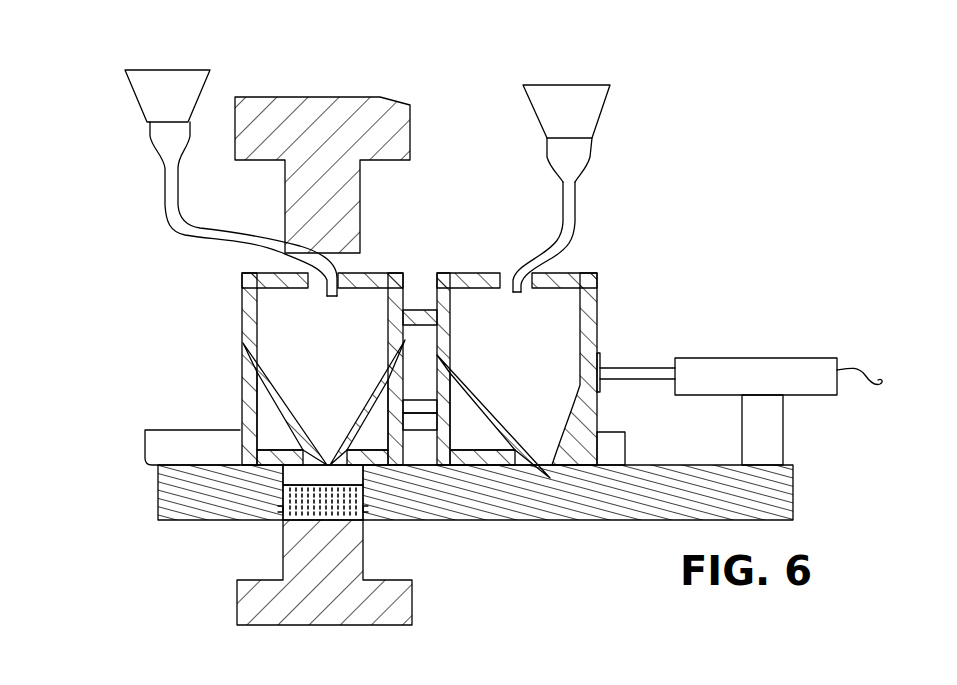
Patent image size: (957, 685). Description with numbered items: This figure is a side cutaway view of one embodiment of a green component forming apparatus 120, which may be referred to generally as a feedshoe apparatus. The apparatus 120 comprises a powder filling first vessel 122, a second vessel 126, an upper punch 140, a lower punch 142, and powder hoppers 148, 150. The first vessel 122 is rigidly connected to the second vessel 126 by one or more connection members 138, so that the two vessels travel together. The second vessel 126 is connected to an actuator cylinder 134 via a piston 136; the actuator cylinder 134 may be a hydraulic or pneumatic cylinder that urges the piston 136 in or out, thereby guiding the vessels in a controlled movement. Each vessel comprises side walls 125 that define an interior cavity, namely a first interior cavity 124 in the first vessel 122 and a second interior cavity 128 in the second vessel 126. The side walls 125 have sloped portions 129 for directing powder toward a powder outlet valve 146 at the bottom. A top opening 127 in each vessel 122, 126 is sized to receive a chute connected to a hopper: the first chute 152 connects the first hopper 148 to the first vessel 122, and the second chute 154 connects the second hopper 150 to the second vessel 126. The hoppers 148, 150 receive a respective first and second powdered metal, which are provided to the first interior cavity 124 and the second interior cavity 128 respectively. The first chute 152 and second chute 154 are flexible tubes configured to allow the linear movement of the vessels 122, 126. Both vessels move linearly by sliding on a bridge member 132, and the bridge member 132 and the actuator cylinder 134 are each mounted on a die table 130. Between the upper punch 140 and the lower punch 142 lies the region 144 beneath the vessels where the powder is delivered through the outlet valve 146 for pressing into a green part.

The green component forming apparatus 120 is at (625, 262).
The first vessel 122 is at (405, 305).
The first interior cavity 124 is at (275, 331).
The side walls 125 is at (245, 292).
The second vessel 126 is at (598, 286).
The top opening 127 is at (483, 272).
The second interior cavity 128 is at (552, 360).
The sloped portions 129 is at (150, 383).
The die table 130 is at (795, 475).
The bridge member 132 is at (618, 445).
The actuator cylinder 134 is at (775, 370).
The piston 136 is at (650, 366).
The connection members 138 is at (426, 312).
The upper punch 140 is at (360, 177).
The lower punch 142 is at (400, 608).
The insert 144 is at (368, 468).
The powder outlet valve 146 is at (283, 487).
The first hopper 148 is at (166, 84).
The second hopper 150 is at (590, 105).
The first chute 152 is at (160, 140).
The second chute 154 is at (570, 152).